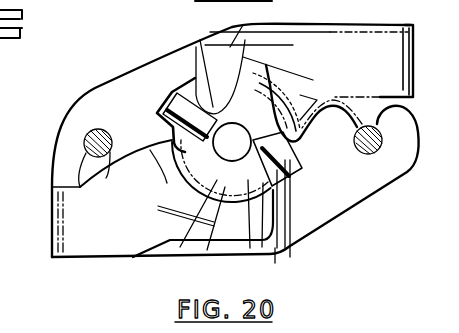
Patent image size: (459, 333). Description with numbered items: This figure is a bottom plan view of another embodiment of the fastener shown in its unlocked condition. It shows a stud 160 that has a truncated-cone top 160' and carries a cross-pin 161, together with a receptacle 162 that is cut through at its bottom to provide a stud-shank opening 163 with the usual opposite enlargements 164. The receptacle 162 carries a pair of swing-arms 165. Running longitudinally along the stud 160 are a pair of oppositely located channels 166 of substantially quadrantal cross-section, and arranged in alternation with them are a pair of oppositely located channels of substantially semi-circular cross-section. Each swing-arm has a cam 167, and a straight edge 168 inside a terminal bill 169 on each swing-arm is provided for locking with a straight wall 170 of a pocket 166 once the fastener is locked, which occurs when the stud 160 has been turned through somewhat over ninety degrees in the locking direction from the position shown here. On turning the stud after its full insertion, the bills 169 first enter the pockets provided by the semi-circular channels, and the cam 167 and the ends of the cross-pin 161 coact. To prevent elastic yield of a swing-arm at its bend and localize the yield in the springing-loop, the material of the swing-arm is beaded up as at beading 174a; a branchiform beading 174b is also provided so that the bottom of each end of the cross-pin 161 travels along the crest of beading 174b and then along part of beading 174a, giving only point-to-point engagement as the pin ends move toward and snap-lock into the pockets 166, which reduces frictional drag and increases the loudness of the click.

The stud 160 is at (233, 161).
The truncated-cone top 160' is at (148, 270).
The cross-pin 161 is at (175, 90).
The receptacle 162 is at (70, 100).
The stud-shank opening 163 is at (180, 150).
The opposite enlargements 164 is at (187, 117).
The swing-arms 165 is at (365, 50).
The channels 166 is at (173, 192).
The cam 167 is at (310, 135).
The straight edge 168 is at (245, 103).
The terminal bill 169 is at (200, 40).
The straight wall 170 is at (273, 263).
The beading 174a is at (280, 83).
The branchiform beading 174b is at (163, 160).